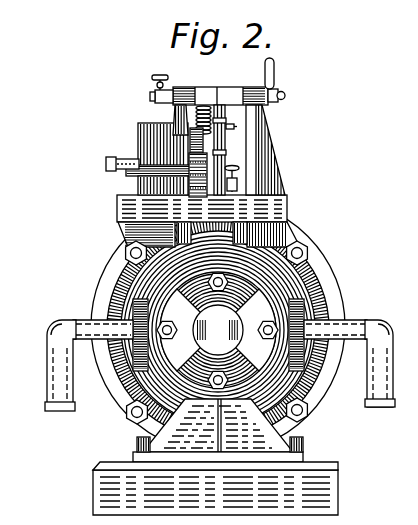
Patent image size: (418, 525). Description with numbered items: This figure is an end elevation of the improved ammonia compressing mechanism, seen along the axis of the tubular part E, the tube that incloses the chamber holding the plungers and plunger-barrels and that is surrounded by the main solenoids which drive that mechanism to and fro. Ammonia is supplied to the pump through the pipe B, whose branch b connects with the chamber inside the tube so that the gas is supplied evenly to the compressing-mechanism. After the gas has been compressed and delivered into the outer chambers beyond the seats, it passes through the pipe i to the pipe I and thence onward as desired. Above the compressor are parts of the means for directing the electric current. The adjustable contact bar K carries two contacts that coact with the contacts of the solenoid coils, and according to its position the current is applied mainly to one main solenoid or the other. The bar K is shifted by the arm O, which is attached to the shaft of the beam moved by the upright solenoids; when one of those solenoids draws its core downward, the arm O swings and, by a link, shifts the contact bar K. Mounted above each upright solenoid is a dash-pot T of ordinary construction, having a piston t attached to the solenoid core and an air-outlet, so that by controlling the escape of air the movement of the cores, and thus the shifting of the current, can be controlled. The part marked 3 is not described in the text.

The tubular part E is at (177, 308).
The dash-pot T is at (144, 147).
The piston t is at (118, 161).
The arm O is at (218, 162).
The adjustable contact bar K is at (271, 178).
The bracket plate 3 is at (193, 220).
The pipe i is at (80, 318).
The pipe I is at (70, 404).
The branch b is at (349, 326).
The pipe B is at (373, 404).